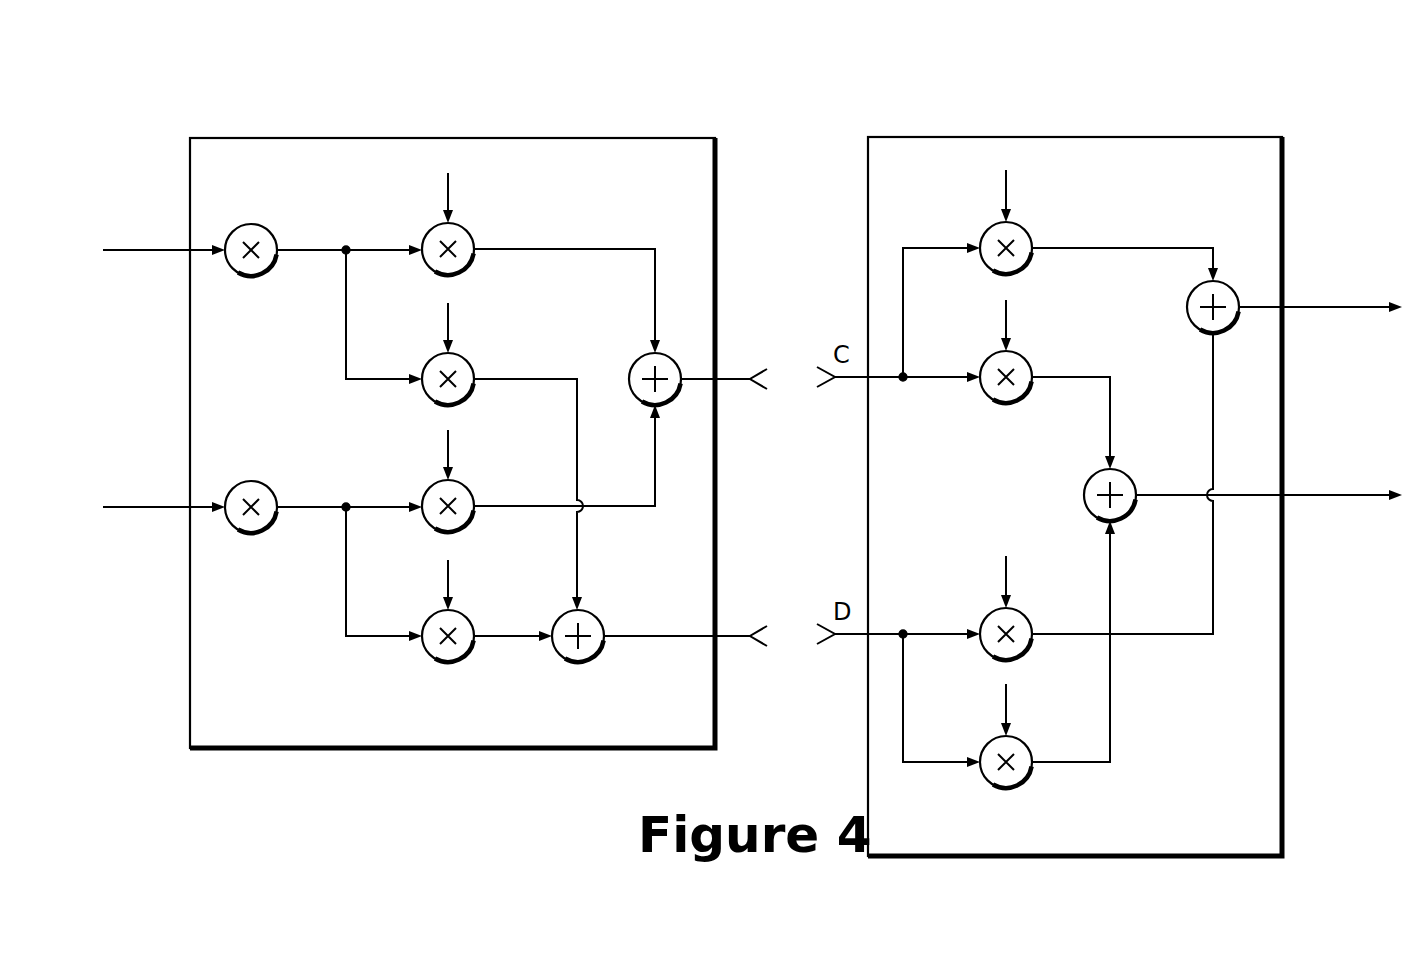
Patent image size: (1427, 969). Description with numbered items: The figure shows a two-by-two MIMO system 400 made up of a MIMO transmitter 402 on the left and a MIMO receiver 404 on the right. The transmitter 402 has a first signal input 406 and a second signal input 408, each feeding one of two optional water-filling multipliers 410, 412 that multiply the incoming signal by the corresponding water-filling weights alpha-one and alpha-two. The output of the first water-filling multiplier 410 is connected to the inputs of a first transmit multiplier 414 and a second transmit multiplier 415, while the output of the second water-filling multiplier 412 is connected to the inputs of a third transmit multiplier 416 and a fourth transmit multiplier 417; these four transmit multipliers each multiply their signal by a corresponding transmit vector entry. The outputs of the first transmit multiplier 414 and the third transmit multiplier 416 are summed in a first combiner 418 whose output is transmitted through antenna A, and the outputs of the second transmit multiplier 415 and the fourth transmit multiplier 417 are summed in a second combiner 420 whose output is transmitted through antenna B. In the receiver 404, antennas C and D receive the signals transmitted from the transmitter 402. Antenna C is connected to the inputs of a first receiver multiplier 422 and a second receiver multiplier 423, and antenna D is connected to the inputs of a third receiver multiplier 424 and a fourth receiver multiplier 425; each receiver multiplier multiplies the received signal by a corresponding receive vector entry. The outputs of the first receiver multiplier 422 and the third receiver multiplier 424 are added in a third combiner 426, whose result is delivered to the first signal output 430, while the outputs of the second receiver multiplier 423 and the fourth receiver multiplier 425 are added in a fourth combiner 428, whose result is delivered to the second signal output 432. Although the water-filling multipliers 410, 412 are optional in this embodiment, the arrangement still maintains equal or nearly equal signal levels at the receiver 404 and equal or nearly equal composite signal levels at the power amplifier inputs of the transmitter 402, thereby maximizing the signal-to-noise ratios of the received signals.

The MIMO system 400 is at (1218, 100).
The MIMO transmitter 402 is at (452, 414).
The MIMO receiver 404 is at (1075, 466).
The first signal input 406 is at (164, 263).
The second signal input 408 is at (164, 521).
The first water-filling multiplier 410 is at (251, 259).
The second water-filling multiplier 412 is at (251, 517).
The first transmit multiplier 414 is at (440, 275).
The second transmit multiplier 415 is at (440, 405).
The third transmit multiplier 416 is at (440, 533).
The fourth transmit multiplier 417 is at (487, 641).
The first combiner 418 is at (630, 366).
The second combiner 420 is at (659, 661).
The first receiver multiplier 422 is at (1000, 273).
The second receiver multiplier 423 is at (1000, 402).
The third receiver multiplier 424 is at (1000, 660).
The fourth receiver multiplier 425 is at (1000, 787).
The third combiner 426 is at (1187, 307).
The fourth combiner 428 is at (1084, 495).
The first signal output 430 is at (1320, 321).
The second signal output 432 is at (1269, 509).